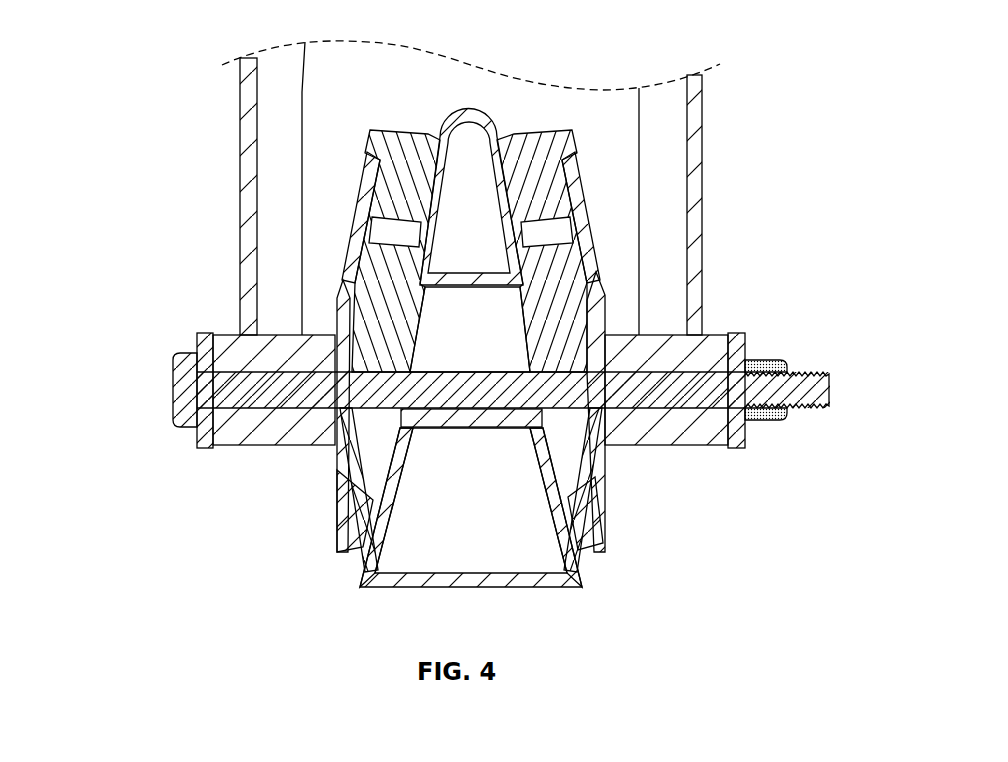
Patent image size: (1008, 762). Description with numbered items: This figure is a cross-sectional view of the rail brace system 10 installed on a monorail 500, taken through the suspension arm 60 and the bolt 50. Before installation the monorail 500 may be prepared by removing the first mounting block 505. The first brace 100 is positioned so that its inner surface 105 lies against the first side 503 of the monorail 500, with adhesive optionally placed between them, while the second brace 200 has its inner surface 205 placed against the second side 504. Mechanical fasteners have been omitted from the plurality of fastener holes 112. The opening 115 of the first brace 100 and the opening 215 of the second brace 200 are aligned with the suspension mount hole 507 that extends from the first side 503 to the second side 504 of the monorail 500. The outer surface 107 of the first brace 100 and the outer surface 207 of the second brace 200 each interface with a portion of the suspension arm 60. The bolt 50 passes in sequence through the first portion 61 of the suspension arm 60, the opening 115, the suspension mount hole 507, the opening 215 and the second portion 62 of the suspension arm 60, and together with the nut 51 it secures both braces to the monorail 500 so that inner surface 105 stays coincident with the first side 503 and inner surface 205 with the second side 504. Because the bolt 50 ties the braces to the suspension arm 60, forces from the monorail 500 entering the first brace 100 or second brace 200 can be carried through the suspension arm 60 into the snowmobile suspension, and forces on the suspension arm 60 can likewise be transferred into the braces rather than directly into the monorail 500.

The rail brace system 10 is at (152, 97).
The bolt 50 is at (173, 388).
The nut 51 is at (780, 423).
The suspension arm 60 is at (703, 333).
The first portion of suspension arm 61 is at (203, 349).
The second portion of suspension arm 62 is at (613, 333).
The first brace 100 is at (407, 128).
The inner surface of first brace 105 is at (382, 480).
The outer surface of first brace 107 is at (337, 440).
The fastener holes 112 is at (357, 508).
The opening of first brace 115 is at (345, 370).
The second brace 200 is at (577, 447).
The inner surface of second brace 205 is at (563, 473).
The outer surface of second brace 207 is at (600, 413).
The opening of second brace 215 is at (570, 317).
The monorail 500 is at (428, 578).
The first side of monorail 503 is at (352, 562).
The second side of monorail 504 is at (578, 561).
The first mounting block 505 is at (236, 5).
The suspension mount hole 507 is at (527, 348).